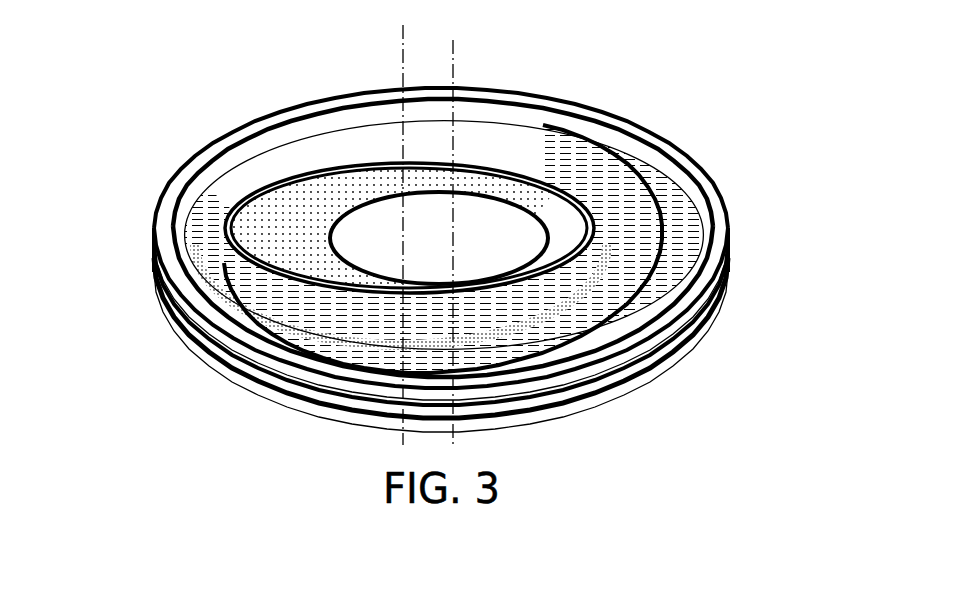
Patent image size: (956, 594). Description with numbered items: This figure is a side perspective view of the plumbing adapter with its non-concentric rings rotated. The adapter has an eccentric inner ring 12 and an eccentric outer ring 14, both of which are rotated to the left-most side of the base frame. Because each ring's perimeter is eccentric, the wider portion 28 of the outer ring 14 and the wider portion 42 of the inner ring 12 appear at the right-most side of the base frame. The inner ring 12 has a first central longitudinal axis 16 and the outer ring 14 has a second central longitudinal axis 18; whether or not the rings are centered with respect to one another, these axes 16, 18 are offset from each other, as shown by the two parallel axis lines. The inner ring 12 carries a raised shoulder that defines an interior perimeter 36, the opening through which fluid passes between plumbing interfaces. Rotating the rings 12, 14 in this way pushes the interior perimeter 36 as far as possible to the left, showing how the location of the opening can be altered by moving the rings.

The inner ring 12 is at (276, 168).
The outer ring 14 is at (265, 240).
The first central longitudinal axis 16 is at (402, 66).
The second central longitudinal axis 18 is at (455, 76).
The wider portion of the outer ring 28 is at (677, 240).
The interior perimeter 36 is at (497, 240).
The wider portion of the inner ring 42 is at (630, 205).